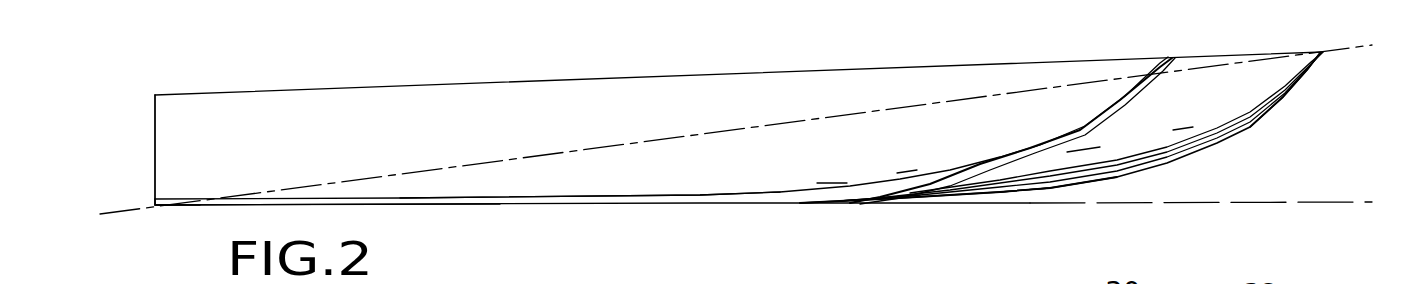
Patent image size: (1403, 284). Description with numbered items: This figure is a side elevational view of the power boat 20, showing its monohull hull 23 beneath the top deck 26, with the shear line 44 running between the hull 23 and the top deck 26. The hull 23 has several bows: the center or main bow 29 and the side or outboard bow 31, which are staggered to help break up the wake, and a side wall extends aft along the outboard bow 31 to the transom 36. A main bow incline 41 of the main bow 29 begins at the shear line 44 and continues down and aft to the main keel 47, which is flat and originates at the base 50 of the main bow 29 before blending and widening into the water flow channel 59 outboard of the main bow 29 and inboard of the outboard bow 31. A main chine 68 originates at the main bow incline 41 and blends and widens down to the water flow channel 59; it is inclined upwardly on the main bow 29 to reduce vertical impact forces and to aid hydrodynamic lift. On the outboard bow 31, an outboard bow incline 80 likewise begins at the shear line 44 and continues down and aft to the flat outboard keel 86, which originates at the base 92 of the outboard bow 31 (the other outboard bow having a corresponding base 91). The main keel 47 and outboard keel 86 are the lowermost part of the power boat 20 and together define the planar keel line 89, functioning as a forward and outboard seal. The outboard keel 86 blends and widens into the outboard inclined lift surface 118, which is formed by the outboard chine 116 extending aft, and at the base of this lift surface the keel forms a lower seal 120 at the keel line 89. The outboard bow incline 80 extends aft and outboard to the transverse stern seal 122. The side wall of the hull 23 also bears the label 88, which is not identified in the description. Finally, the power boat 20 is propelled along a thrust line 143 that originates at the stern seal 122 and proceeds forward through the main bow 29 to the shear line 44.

The power boat 20 is at (327, 85).
The hull 23 is at (815, 65).
The top deck 26 is at (602, 75).
The main bow 29 is at (1267, 120).
The outboard bow 31 is at (1147, 100).
The transom 36 is at (155, 129).
The main bow incline 41 is at (1167, 164).
The shear line 44 is at (367, 85).
The main keel 47 is at (965, 204).
The base of the main bow 50 is at (1008, 204).
The water flow channel 59 is at (1057, 190).
The main chine 68 is at (1117, 167).
The outboard bow incline 80 is at (982, 177).
The outboard keel 86 is at (727, 205).
The hull body 88 is at (378, 149).
The keel line 89 is at (1327, 203).
The base of the outboard bow 91 is at (848, 207).
The base of the outboard bow 92 is at (880, 198).
The outboard chine 116 is at (880, 187).
The outboard inclined lift surface 118 is at (445, 208).
The lower seal 120 is at (577, 208).
The stern seal 122 is at (163, 210).
The thrust line 143 is at (667, 137).